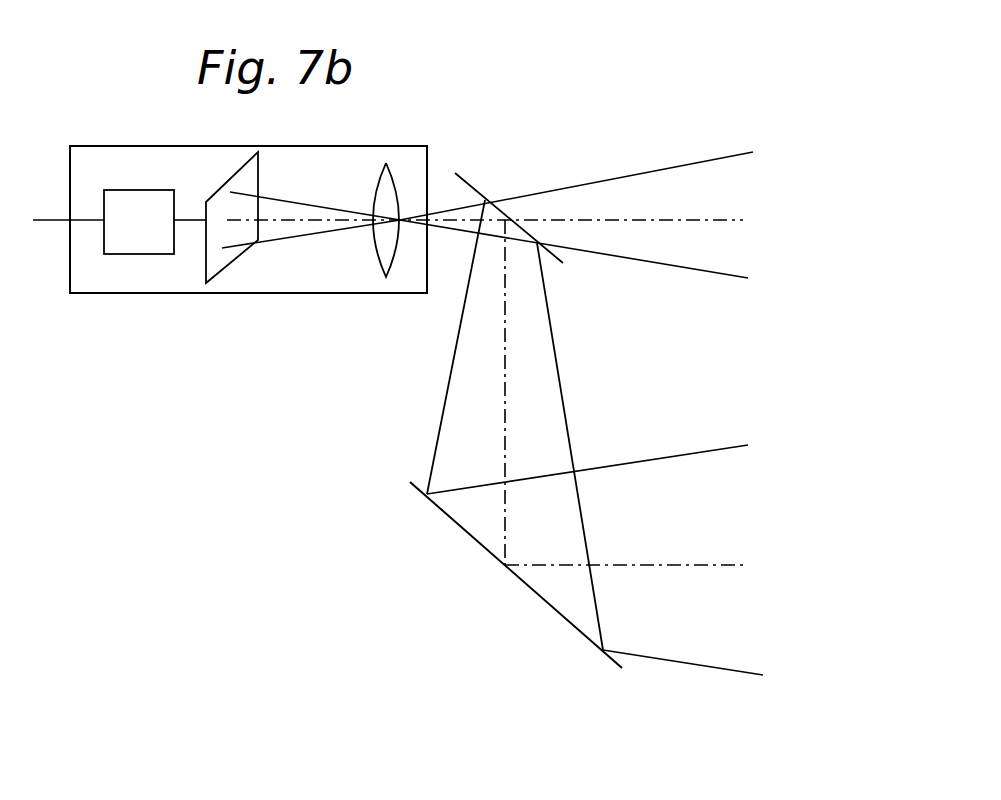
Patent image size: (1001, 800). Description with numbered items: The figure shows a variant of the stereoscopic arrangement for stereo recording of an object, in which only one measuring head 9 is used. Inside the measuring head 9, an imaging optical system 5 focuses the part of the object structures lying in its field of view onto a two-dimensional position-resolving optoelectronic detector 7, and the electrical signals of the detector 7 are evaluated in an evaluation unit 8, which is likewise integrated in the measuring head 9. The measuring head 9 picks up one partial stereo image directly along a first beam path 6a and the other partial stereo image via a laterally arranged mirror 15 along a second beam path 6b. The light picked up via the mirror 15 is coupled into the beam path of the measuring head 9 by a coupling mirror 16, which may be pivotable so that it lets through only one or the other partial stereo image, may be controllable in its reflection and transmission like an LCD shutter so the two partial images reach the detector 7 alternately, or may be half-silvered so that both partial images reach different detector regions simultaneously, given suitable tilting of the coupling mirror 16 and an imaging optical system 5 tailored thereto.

The measuring head 9 is at (130, 295).
The evaluation unit 8 is at (148, 236).
The two-dimensional position-resolving optoelectronic detector 7 is at (247, 173).
The imaging optical system 5 is at (383, 185).
The first light beam 6a is at (667, 221).
The second light beam 6b is at (675, 566).
The coupling mirror 16 is at (560, 263).
The mirror 15 is at (453, 527).